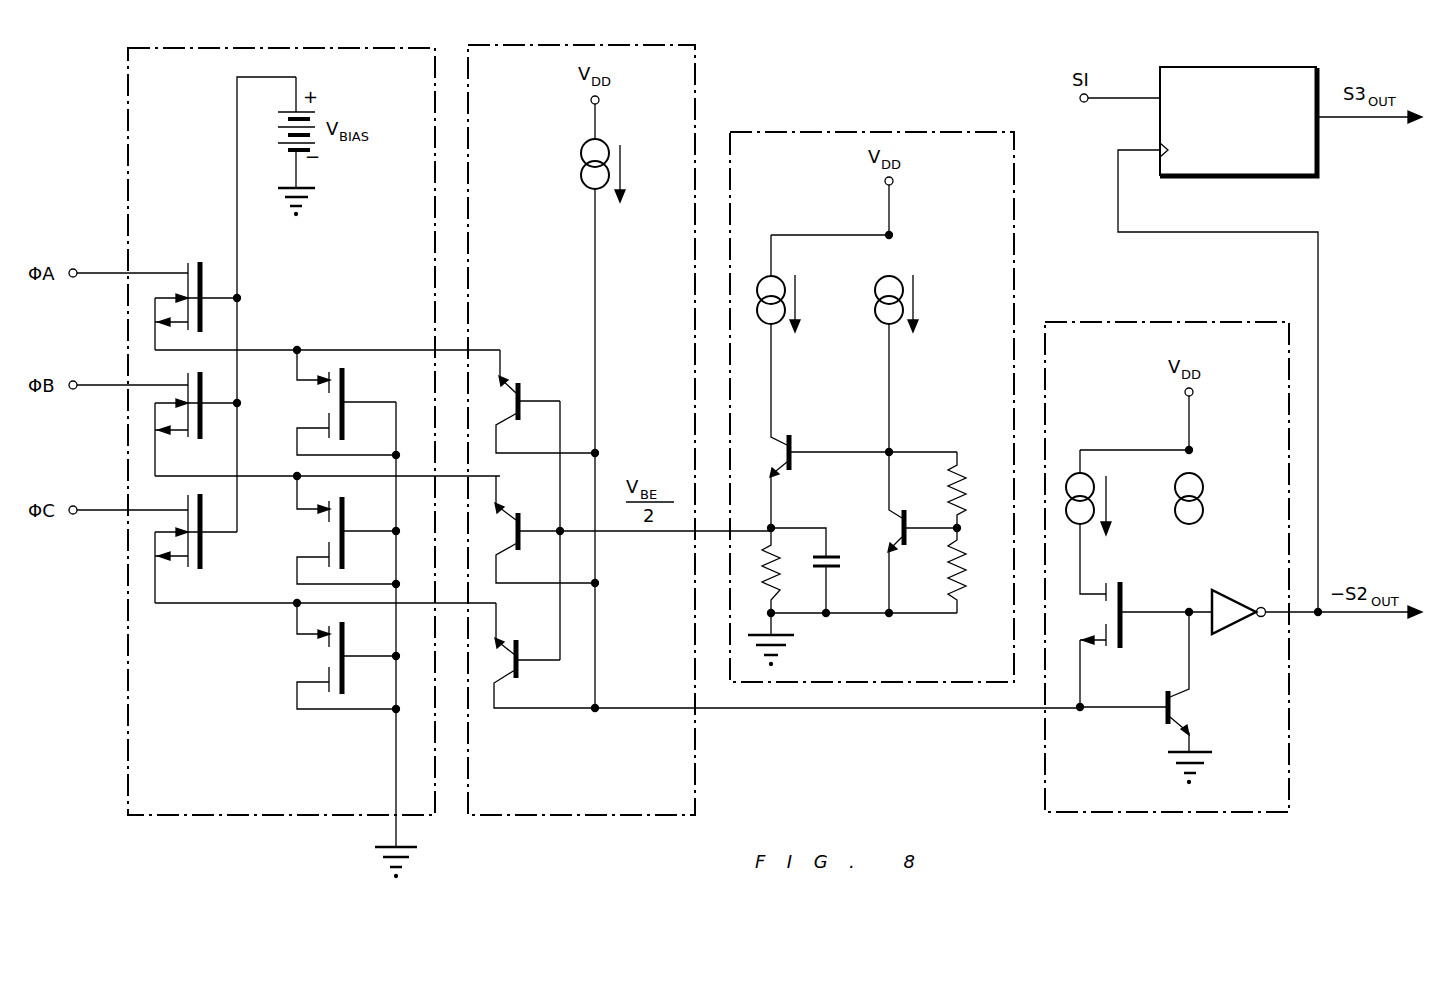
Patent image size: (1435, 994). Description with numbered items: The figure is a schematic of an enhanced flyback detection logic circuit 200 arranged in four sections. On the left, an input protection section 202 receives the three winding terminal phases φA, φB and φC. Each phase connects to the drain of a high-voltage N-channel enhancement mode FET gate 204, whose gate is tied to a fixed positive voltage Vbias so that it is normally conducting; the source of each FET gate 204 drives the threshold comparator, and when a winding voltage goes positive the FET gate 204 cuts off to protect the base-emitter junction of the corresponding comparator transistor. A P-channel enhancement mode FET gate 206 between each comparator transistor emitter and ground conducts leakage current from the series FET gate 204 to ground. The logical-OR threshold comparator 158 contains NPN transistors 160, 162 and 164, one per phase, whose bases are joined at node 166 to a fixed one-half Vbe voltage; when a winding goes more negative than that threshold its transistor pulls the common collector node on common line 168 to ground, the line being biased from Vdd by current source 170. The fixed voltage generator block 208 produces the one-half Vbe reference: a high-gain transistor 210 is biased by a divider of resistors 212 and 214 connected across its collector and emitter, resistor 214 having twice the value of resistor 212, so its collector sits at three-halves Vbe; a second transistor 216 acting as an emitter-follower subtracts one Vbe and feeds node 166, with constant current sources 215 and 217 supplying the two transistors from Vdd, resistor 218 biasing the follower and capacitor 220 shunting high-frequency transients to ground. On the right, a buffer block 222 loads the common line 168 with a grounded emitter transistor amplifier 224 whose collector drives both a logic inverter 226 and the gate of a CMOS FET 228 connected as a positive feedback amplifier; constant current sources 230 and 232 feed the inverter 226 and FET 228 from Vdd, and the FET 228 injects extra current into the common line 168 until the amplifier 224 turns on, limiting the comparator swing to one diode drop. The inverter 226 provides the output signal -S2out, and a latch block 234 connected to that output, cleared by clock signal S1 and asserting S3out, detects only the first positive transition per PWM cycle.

The logic circuit 200 is at (933, 60).
The input protection section 202 is at (326, 48).
The high-voltage N-channel enhancement mode FET gate 204 is at (202, 266).
The P-channel enhancement mode FET gate 206 is at (344, 384).
The logical-OR threshold comparator 158 is at (627, 45).
The NPN transistor 160 is at (522, 390).
The NPN transistor 162 is at (522, 515).
The NPN transistor 164 is at (524, 643).
The node 166 is at (560, 533).
The common line 168 is at (594, 262).
The current source 170 is at (580, 154).
The fixed voltage generator block 208 is at (959, 132).
The high-gain transistor 210 is at (906, 544).
The resistor 212 is at (962, 482).
The resistor 214 is at (962, 564).
The constant current source 215 is at (898, 280).
The second transistor 216 is at (790, 464).
The constant current source 217 is at (780, 280).
The resistor 218 is at (777, 573).
The capacitor 220 is at (830, 574).
The buffer block 222 is at (1196, 322).
The grounded emitter transistor amplifier 224 is at (1168, 718).
The logic inverter 226 is at (1238, 570).
The CMOS FET 228 is at (1124, 632).
The constant current source 230 is at (1192, 474).
The constant current source 232 is at (1100, 484).
The latch block 234 is at (1260, 67).